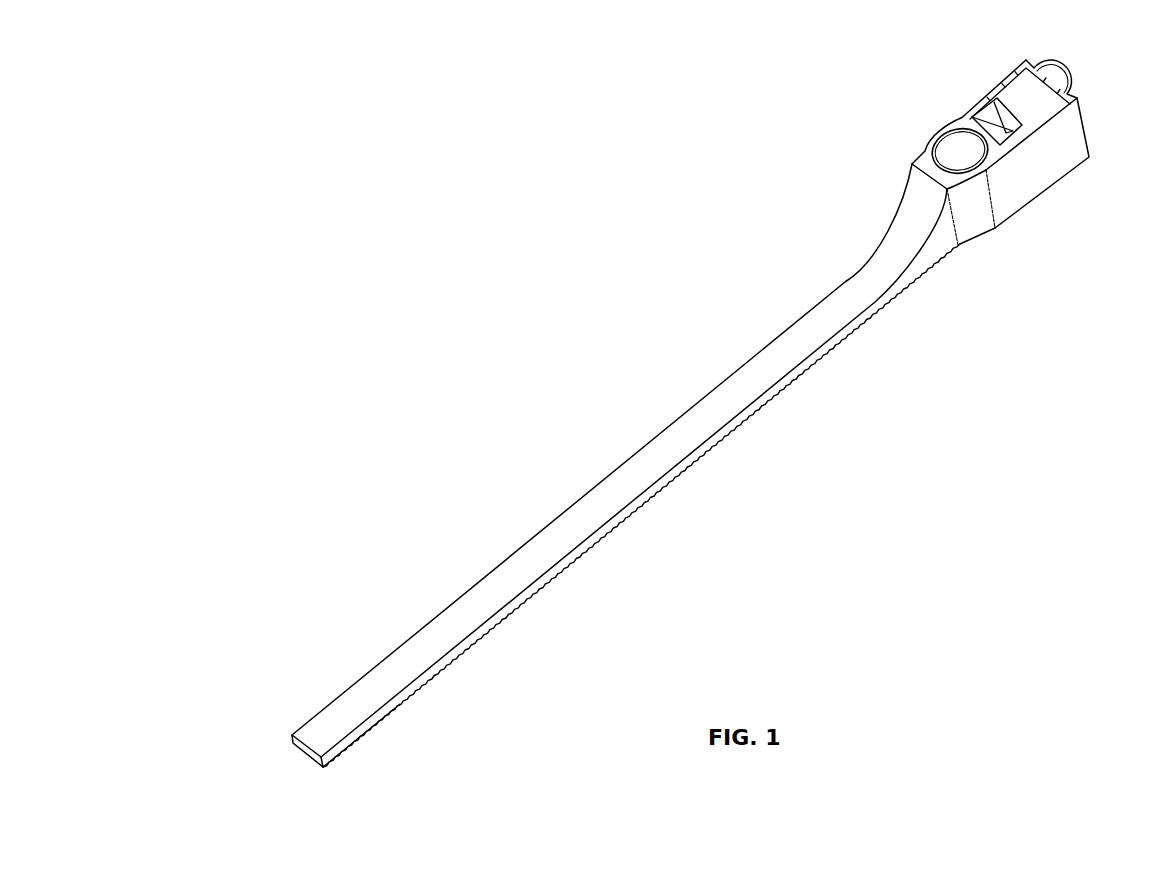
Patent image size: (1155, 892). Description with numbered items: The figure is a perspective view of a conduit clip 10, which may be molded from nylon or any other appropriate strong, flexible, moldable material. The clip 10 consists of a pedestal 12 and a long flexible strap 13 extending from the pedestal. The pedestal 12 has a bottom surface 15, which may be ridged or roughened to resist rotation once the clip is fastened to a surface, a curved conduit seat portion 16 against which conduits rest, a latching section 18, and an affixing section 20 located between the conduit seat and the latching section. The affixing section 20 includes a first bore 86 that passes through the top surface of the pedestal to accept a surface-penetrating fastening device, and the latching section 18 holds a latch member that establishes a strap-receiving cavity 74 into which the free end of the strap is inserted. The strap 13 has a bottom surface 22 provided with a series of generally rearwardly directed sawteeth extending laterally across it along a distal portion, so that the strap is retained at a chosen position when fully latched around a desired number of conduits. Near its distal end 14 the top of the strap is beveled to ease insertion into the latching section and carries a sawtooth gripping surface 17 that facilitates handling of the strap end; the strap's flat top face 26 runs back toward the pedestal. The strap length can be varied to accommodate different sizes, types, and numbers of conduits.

The conduit clip 10 is at (696, 342).
The pedestal 12 is at (1089, 157).
The flexible strap 13 is at (905, 335).
The distal end 14 is at (291, 757).
The bottom surface 15 is at (1045, 191).
The curved conduit seat portion 16 is at (887, 242).
The sawtooth gripping surface 17 is at (373, 728).
The latching section 18 is at (1078, 66).
The affixing section 20 is at (921, 137).
The bottom surface of strap 22 is at (525, 602).
The planar surface 26 is at (801, 362).
The strap-receiving cavity 74 is at (988, 113).
The first bore 86 is at (955, 143).